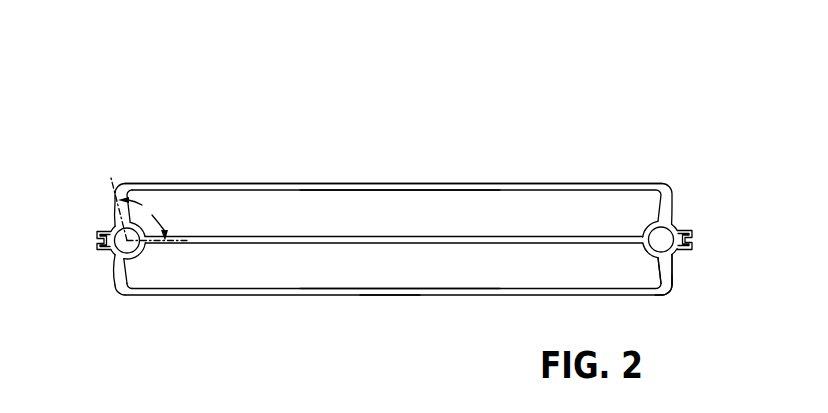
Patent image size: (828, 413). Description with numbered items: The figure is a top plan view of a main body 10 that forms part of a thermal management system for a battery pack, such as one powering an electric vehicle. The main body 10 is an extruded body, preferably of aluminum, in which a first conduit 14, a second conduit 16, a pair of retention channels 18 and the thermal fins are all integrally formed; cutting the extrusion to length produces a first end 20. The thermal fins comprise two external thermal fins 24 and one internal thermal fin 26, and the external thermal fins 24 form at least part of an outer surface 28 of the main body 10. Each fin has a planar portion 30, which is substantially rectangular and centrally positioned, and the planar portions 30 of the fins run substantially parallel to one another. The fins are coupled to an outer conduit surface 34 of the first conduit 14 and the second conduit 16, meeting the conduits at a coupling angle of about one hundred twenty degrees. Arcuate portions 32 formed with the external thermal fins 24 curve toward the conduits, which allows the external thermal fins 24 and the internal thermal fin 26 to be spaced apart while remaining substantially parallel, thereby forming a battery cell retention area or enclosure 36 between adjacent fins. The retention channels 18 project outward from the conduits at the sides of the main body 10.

The main body 10 is at (161, 134).
The first conduit 14 is at (117, 252).
The second conduit 16 is at (673, 236).
The retention channels 18 is at (97, 239).
The first end 20 is at (615, 185).
The external thermal fins 24 is at (547, 185).
The internal thermal fin 26 is at (434, 244).
The outer surface 28 is at (180, 296).
The planar portion 30 is at (392, 296).
The arcuate portion 32 is at (671, 290).
The outer conduit surface 34 is at (115, 262).
The battery cell retention area or enclosure 36 is at (265, 210).